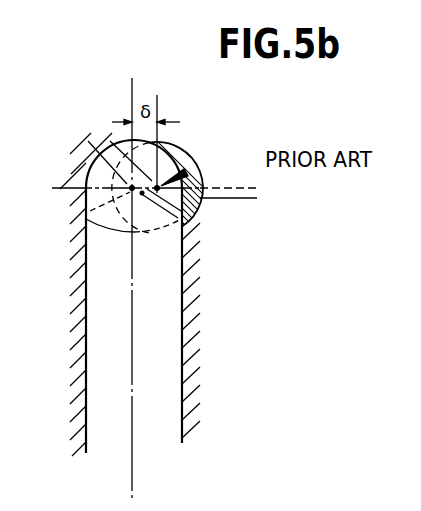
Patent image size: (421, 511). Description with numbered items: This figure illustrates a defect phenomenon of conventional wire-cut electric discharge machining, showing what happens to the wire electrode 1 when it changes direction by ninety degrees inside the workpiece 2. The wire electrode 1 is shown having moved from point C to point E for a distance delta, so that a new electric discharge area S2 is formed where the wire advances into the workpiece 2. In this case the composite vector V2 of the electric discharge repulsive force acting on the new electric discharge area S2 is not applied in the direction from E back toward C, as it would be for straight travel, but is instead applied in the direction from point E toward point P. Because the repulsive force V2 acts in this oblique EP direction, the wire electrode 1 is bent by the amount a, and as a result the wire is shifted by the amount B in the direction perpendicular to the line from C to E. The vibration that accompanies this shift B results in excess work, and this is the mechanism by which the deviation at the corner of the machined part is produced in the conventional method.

The wire electrode 1 is at (128, 232).
The tube wall (prior art) 2 is at (86, 331).
The new electric discharge area S2 is at (173, 155).
The composite vector V2 is at (185, 172).
The point P is at (86, 219).
The point C is at (88, 141).
The point E is at (110, 141).
The bending of the wire a is at (160, 210).
The shift B is at (232, 175).